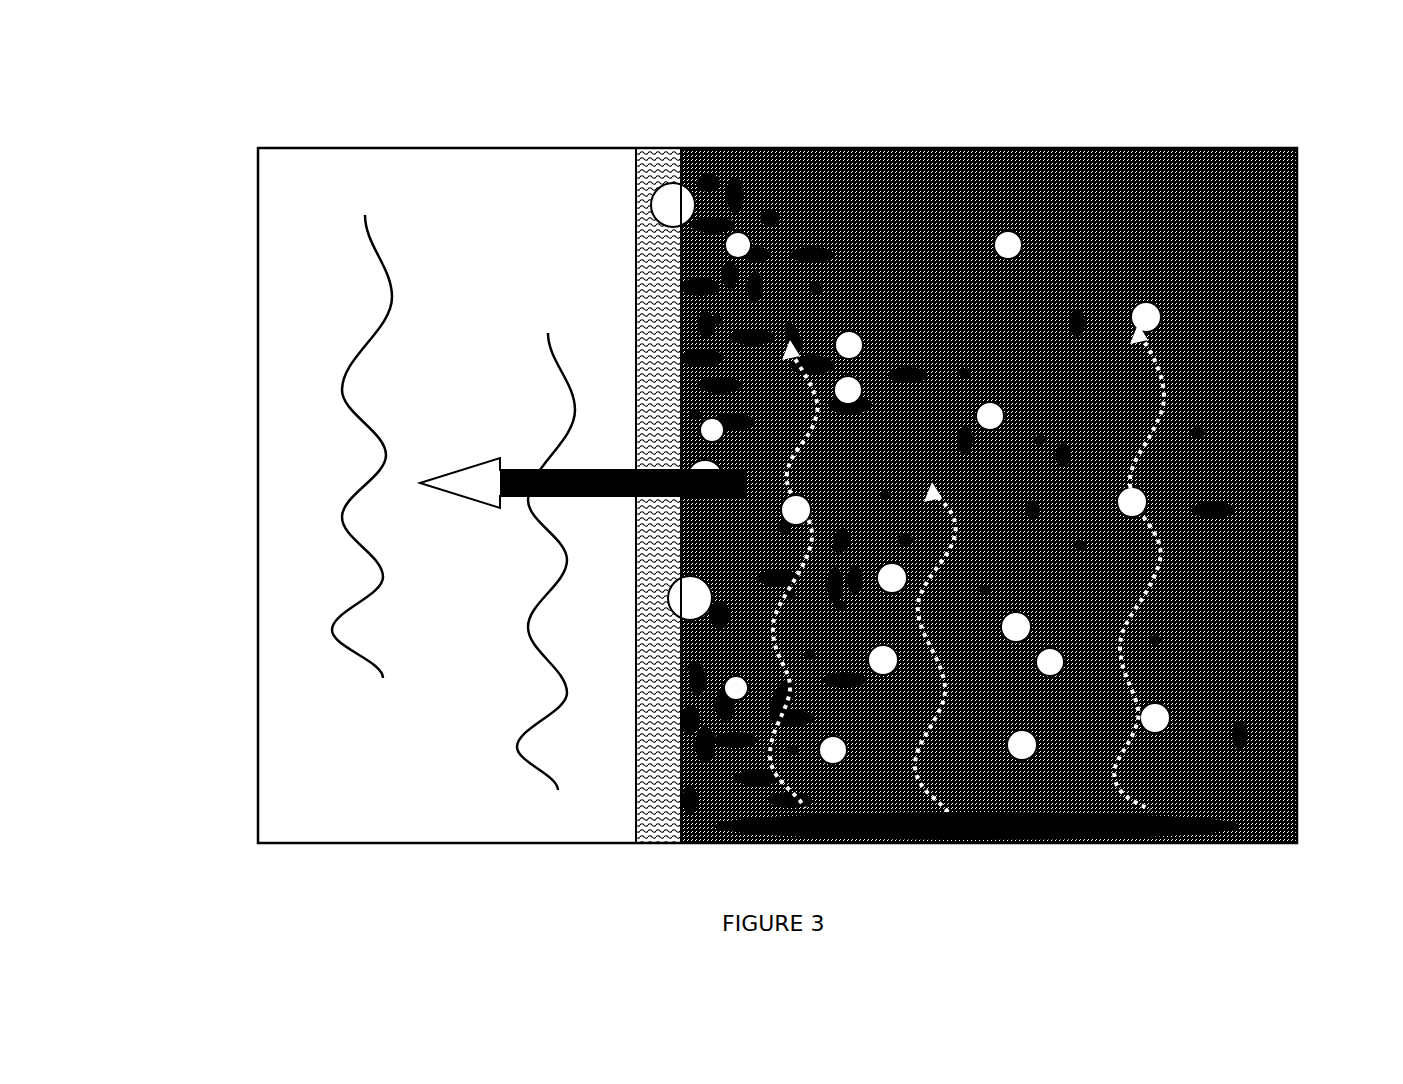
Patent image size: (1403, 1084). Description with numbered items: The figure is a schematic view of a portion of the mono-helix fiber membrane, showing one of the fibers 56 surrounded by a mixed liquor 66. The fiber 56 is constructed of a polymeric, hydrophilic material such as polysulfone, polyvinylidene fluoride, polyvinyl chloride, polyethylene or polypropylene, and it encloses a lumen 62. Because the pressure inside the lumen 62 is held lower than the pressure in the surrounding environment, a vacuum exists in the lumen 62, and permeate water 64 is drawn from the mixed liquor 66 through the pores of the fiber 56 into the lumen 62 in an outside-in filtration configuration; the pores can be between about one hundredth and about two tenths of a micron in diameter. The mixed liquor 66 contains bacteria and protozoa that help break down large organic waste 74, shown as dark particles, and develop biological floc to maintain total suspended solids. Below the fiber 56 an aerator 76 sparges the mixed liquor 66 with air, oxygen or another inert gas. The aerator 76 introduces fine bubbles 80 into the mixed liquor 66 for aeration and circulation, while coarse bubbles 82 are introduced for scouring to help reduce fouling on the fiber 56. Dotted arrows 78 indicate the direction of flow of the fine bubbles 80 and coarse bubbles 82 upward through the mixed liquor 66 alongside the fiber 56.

The fibers 56 is at (650, 130).
The lumen 62 is at (318, 130).
The permeate water 64 is at (492, 494).
The mixed liquor 66 is at (862, 195).
The large organic waste 74 is at (1205, 432).
The aerator 76 is at (1085, 835).
The dotted arrows 78 is at (1150, 570).
The fine bubbles 80 is at (1010, 242).
The coarse bubbles 82 is at (690, 200).